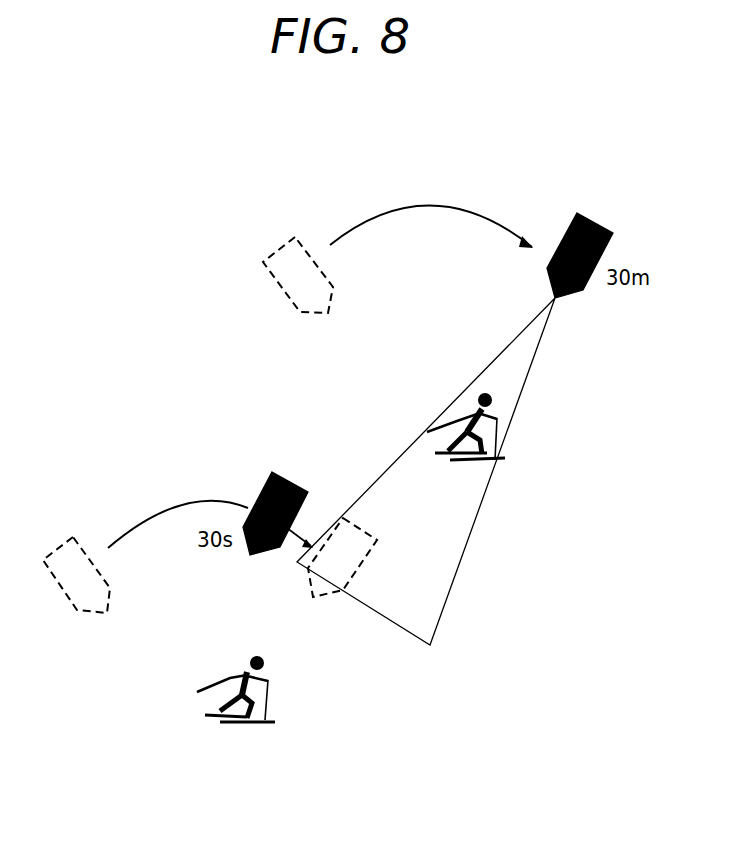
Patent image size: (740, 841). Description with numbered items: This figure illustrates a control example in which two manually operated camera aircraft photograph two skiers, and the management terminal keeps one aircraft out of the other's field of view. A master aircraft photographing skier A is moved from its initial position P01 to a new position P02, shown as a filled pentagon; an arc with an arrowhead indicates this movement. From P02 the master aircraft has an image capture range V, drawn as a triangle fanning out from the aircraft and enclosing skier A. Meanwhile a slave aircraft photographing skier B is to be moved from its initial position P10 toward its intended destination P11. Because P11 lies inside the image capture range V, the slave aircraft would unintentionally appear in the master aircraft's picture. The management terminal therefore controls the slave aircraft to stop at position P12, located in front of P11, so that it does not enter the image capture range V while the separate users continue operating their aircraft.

The initial position of aircraft 30m P01 is at (288, 264).
The destination position of aircraft 30m P02 is at (593, 245).
The initial position of aircraft 30s P10 is at (76, 592).
The intended destination position of aircraft 30s P11 is at (342, 575).
The stop position of aircraft 30s P12 is at (288, 502).
The skier A is at (466, 414).
The skier B is at (236, 679).
The image capture range V is at (437, 578).